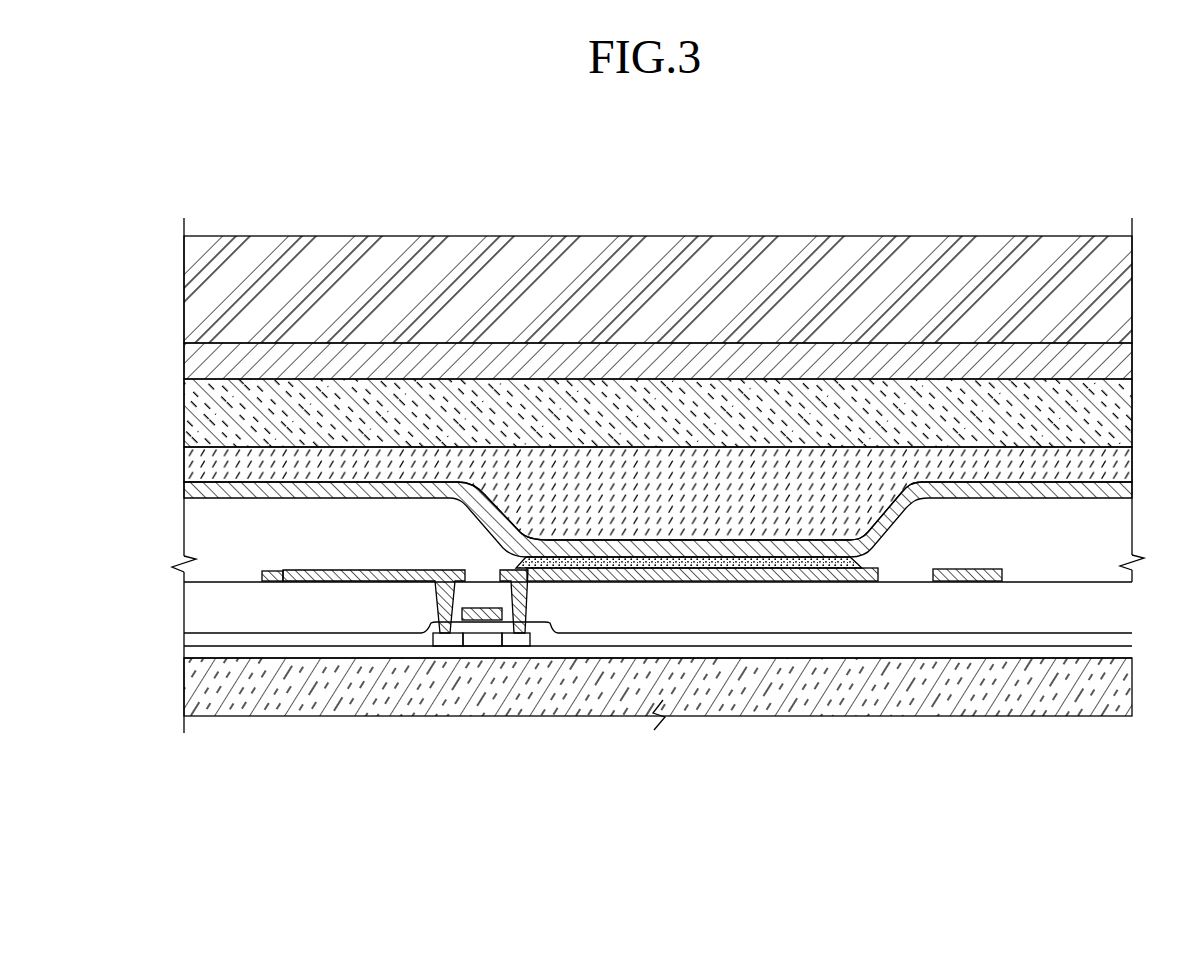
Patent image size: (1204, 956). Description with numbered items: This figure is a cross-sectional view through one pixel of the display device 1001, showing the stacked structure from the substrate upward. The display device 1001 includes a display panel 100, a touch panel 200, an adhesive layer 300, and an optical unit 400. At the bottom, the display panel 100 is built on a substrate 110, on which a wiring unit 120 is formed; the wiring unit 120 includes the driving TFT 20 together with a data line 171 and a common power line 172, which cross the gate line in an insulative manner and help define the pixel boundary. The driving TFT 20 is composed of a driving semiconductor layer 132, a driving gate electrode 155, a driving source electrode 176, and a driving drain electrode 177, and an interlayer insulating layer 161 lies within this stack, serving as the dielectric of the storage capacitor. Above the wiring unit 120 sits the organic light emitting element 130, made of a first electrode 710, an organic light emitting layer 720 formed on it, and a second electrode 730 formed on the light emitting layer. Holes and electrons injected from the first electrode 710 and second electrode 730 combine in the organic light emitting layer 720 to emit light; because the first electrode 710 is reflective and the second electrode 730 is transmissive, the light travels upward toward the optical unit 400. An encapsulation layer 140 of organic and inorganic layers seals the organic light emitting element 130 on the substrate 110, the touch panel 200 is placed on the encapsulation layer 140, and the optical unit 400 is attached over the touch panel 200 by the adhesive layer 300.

The display device 1001 is at (590, 151).
The display panel 100 is at (875, 626).
The substrate 110 is at (787, 700).
The wiring unit 120 is at (184, 583).
The organic light emitting element 130 is at (800, 175).
The driving semiconductor layer 132 is at (473, 640).
The encapsulation layer 140 is at (1103, 462).
The driving gate electrode 155 is at (487, 621).
The interlayer insulating layer 161 is at (684, 615).
The data line 171 is at (963, 583).
The common power line 172 is at (282, 583).
The driving source electrode 176 is at (400, 583).
The driving drain electrode 177 is at (528, 584).
The driving TFT 20 is at (590, 778).
The touch panel 200 is at (1103, 410).
The adhesive layer 300 is at (1103, 362).
The optical unit 400 is at (332, 258).
The first electrode 710 is at (795, 573).
The organic light emitting layer 720 is at (747, 560).
The second electrode 730 is at (697, 546).